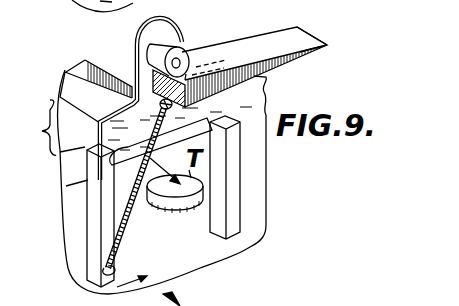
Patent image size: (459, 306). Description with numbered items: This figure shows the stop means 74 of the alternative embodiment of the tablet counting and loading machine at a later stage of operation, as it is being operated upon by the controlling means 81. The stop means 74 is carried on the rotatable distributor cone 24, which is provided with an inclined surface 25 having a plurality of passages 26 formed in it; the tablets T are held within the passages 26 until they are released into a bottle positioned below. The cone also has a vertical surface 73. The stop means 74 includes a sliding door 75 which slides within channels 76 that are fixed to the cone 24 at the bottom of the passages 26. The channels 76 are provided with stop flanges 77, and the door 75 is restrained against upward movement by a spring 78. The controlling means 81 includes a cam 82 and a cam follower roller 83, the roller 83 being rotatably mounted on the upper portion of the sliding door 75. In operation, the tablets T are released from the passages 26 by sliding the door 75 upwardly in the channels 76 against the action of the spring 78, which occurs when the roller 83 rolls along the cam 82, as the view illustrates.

The rotatable distributor cone 24 is at (110, 132).
The inclined surface 25 is at (115, 62).
The passages 26 is at (78, 88).
The vertical surface 73 is at (250, 204).
The stop means 74 is at (207, 237).
The sliding door 75 is at (112, 130).
The channels 76 is at (105, 220).
The stop flanges 77 is at (206, 291).
The spring 78 is at (135, 212).
The controlling means 81 is at (310, 17).
The cam 82 is at (233, 47).
The cam follower roller 83 is at (181, 54).